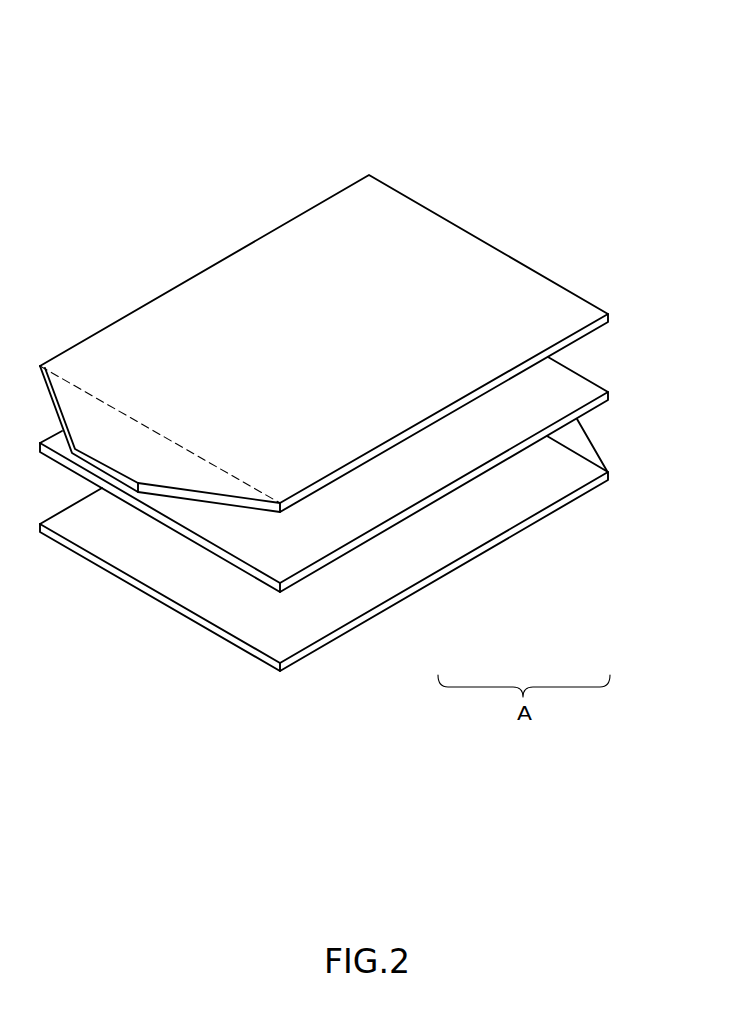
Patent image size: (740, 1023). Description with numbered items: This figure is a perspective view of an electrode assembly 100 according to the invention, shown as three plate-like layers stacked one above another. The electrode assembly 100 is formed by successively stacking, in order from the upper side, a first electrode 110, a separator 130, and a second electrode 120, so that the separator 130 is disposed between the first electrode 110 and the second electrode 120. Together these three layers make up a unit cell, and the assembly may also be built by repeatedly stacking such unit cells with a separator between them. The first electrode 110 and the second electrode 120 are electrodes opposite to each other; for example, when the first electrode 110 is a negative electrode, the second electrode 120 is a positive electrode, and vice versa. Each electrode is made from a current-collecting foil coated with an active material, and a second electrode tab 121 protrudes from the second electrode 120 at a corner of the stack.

The electrode assembly 100 is at (509, 158).
The first electrode 110 is at (395, 443).
The separator 130 is at (475, 463).
The second electrode 120 is at (363, 530).
The second electrode tab 121 is at (579, 447).